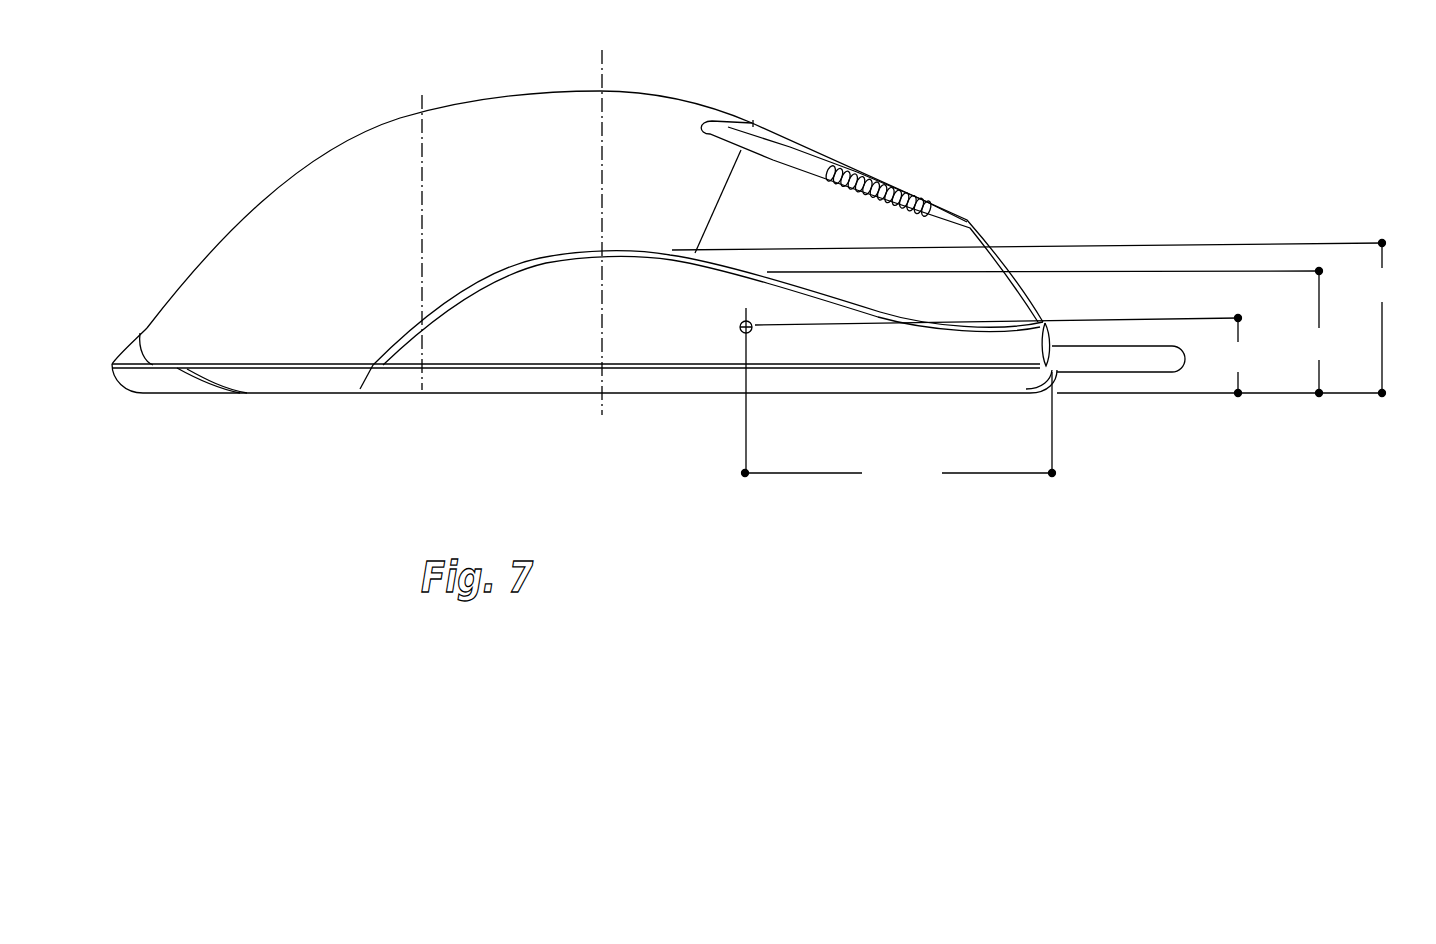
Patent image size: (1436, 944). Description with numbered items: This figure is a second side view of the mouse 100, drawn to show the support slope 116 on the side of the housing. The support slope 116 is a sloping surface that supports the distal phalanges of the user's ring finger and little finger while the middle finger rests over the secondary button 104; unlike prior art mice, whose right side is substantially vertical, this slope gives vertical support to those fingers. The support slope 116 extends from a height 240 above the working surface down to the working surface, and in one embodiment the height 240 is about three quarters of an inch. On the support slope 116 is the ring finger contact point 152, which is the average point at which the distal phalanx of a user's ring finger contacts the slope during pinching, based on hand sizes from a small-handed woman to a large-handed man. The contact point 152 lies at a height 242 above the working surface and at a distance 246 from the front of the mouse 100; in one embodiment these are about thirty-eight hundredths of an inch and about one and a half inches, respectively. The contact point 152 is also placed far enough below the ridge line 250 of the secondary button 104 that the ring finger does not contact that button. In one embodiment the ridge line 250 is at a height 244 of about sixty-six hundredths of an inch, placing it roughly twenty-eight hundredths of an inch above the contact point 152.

The mouse 100 is at (366, 106).
The secondary button 104 is at (770, 172).
The support slope 116 is at (638, 337).
The ring finger contact point 152 is at (738, 330).
The ridge line 250 is at (822, 291).
The height 240 is at (1036, 273).
The height 242 is at (1008, 356).
The height 244 is at (1054, 332).
The distance 246 is at (899, 431).